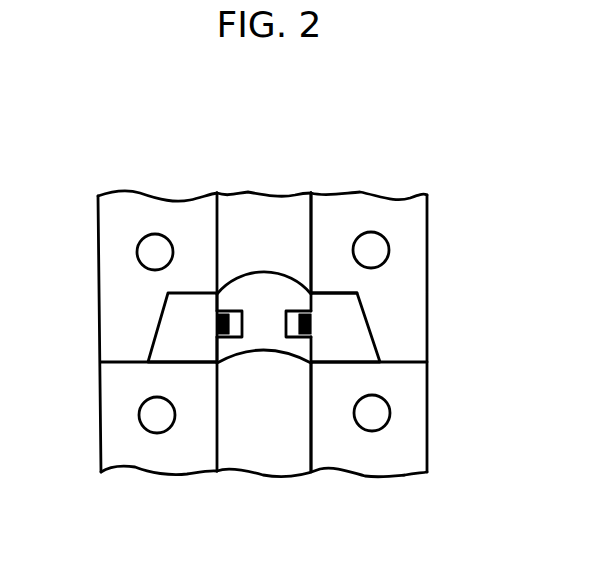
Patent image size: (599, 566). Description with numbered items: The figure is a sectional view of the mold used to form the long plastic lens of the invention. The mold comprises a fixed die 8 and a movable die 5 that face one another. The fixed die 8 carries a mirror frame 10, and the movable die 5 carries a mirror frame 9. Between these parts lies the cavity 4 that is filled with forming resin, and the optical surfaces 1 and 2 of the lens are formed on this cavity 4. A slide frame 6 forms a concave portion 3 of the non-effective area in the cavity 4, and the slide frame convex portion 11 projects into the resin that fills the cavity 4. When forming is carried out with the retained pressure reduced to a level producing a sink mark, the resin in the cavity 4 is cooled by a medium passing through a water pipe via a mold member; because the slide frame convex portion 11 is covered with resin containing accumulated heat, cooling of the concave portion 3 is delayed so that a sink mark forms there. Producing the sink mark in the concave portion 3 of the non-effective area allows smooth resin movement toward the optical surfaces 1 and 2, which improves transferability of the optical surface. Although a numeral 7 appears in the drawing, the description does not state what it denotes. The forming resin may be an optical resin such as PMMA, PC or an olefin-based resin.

The optical surface 1 is at (278, 353).
The optical surface 2 is at (245, 270).
The concave portion 3 is at (215, 330).
The cavity 4 is at (262, 318).
The movable die 5 is at (407, 440).
The slide frame 6 is at (352, 338).
The guide hole 7 is at (382, 248).
The fixed die 8 is at (363, 213).
The mirror frame 9 is at (270, 445).
The mirror frame 10 is at (265, 235).
The slide frame convex portion 11 is at (215, 322).